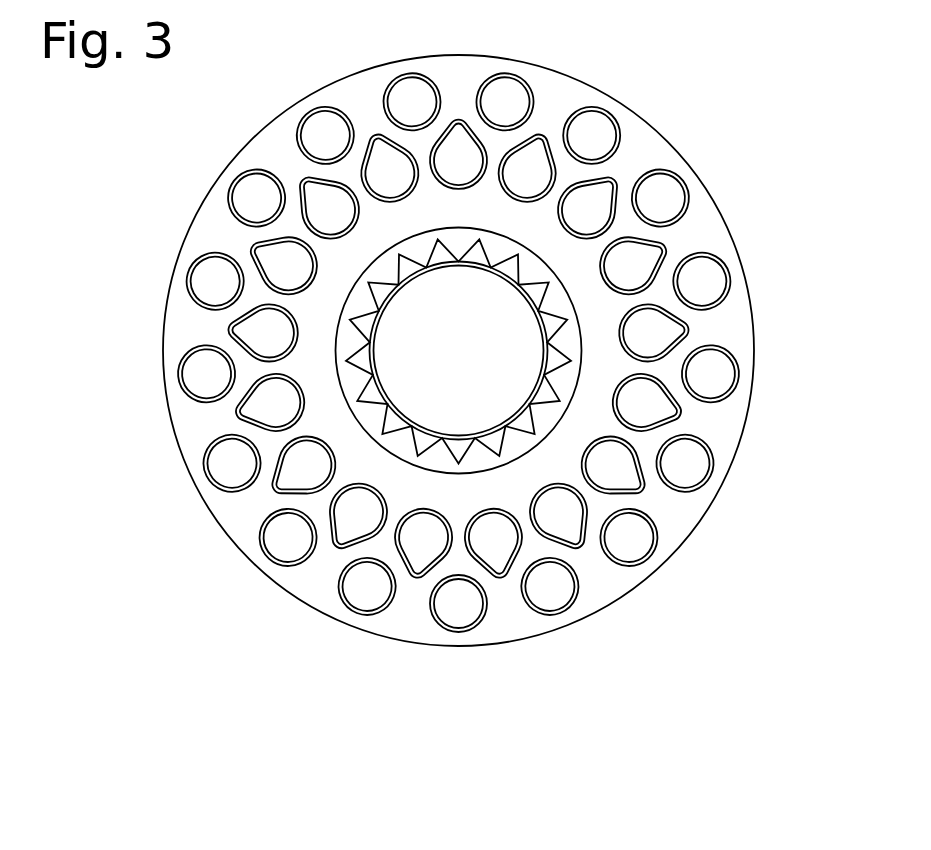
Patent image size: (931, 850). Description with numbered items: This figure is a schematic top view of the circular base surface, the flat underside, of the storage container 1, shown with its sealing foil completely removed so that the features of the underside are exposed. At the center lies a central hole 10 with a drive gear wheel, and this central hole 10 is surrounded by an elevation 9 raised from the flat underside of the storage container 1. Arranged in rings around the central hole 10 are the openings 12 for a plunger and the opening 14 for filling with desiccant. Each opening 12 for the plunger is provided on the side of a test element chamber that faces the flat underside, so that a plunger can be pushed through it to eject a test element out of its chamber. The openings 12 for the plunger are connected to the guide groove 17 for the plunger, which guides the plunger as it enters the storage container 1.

The storage container 1 is at (733, 565).
The elevation on the flat underside of the storage container 9 is at (513, 447).
The central hole with drive gear ring 10 is at (510, 362).
The opening for plunger 12 is at (655, 258).
The opening for desiccant loading 14 is at (595, 125).
The guide groove for plunger 17 is at (470, 553).